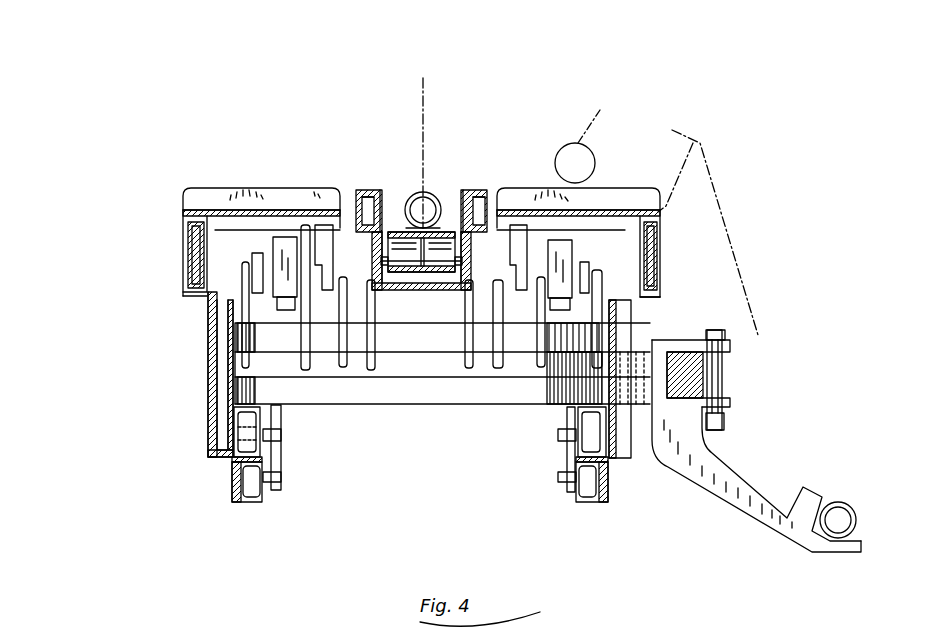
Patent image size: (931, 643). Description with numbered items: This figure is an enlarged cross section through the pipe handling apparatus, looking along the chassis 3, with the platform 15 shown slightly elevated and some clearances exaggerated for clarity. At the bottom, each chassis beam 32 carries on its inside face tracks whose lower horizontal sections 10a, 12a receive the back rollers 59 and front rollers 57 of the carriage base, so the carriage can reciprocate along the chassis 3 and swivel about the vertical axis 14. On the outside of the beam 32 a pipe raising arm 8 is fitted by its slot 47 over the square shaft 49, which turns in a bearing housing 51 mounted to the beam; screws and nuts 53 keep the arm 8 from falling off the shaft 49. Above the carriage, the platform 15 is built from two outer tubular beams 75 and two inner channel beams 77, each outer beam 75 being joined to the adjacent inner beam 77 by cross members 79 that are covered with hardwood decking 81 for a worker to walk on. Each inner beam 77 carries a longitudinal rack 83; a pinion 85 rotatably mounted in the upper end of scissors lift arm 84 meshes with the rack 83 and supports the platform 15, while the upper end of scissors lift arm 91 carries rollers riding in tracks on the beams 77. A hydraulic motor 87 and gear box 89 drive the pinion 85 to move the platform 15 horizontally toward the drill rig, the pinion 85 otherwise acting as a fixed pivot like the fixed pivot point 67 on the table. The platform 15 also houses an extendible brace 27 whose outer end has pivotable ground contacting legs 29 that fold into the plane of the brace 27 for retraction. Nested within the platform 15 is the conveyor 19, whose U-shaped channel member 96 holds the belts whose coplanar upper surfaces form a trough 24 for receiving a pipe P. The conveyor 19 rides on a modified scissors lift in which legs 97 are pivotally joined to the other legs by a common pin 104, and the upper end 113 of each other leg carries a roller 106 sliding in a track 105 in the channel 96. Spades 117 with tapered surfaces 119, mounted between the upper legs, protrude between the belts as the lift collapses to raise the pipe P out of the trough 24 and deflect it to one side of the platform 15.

The chassis 3 is at (644, 450).
The pipe raising arm 8 is at (758, 472).
The lower horizontal section of track 10 10a is at (232, 478).
The lower horizontal section of track 12 12a is at (236, 424).
The vertical axis 14 is at (430, 105).
The platform 15 is at (142, 260).
The conveyor 19 is at (490, 155).
The trough 24 is at (398, 188).
The brace 27 is at (190, 232).
The ground contacting legs 29 is at (190, 282).
The chassis beam 32 is at (207, 368).
The slot 47 is at (725, 358).
The square shaft 49 is at (718, 380).
The bearing housing 51 is at (645, 352).
The screws and nuts 53 is at (722, 393).
The front rollers 57 is at (270, 432).
The back rollers 59 is at (252, 503).
The fixed pivot point 67 is at (252, 282).
The outer longitudinal tubular beam 75 is at (183, 278).
The inner channel beam 77 is at (310, 215).
The cross member 79 is at (185, 213).
The hardwood decking 81 is at (195, 196).
The rack 83 is at (355, 215).
The scissors lift arm 84 is at (540, 404).
The pinion 85 is at (300, 255).
The hydraulic motor 87 is at (245, 318).
The gear box 89 is at (232, 302).
The scissors lift arm 91 is at (255, 265).
The U-shaped channel member 96 is at (452, 292).
The scissors lift leg 97 is at (348, 278).
The common pin 104 is at (355, 378).
The track 105 is at (360, 188).
The roller 106 is at (358, 188).
The upper end of leg 101 113 is at (346, 332).
The spade 117 is at (440, 180).
The tapered surface 119 is at (418, 180).
The pipe P is at (838, 502).